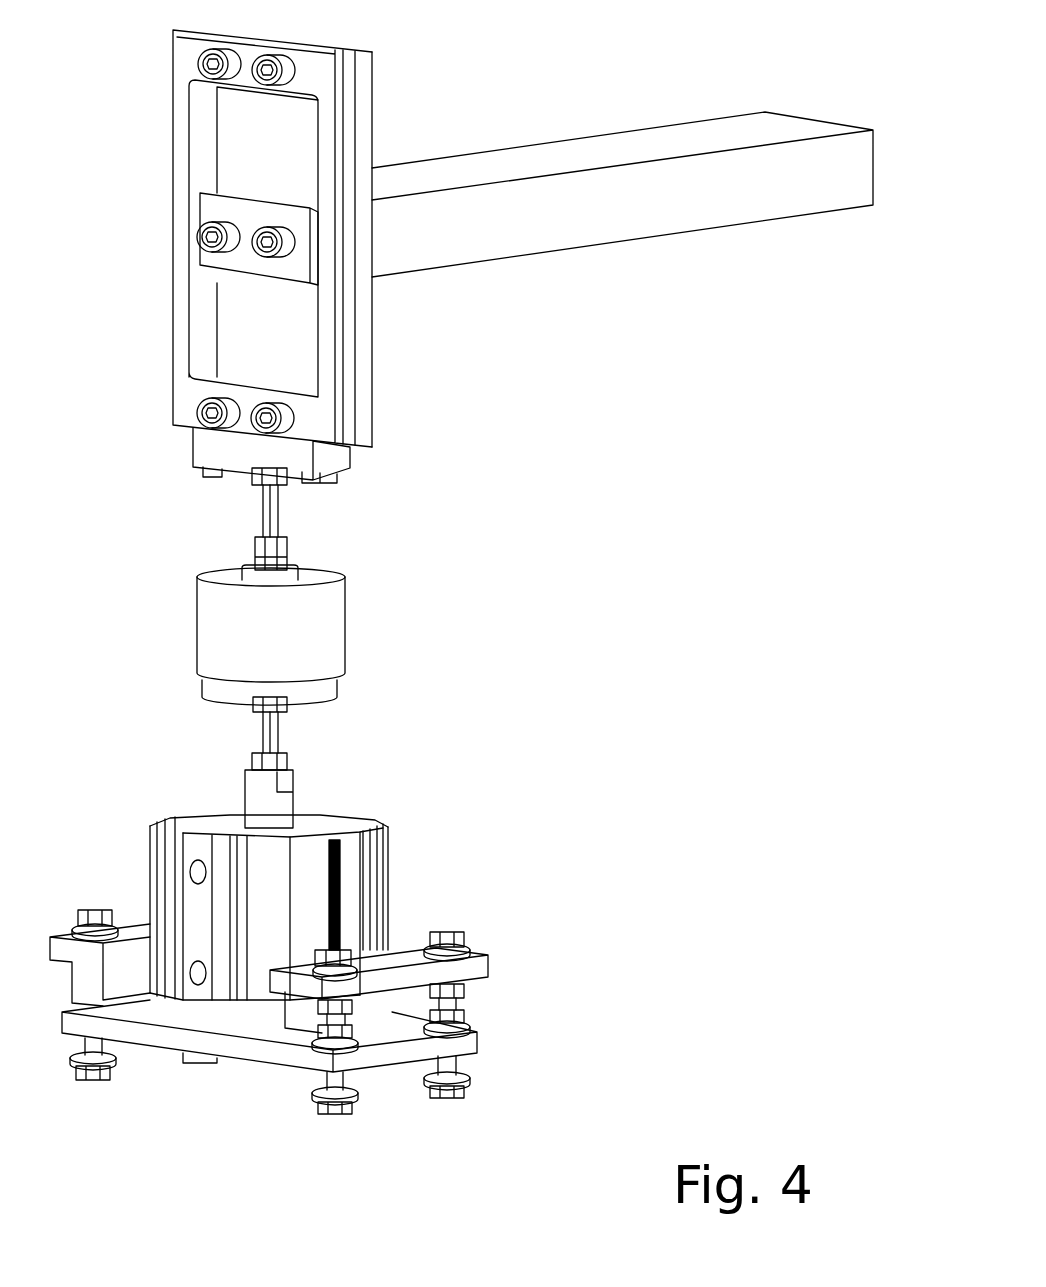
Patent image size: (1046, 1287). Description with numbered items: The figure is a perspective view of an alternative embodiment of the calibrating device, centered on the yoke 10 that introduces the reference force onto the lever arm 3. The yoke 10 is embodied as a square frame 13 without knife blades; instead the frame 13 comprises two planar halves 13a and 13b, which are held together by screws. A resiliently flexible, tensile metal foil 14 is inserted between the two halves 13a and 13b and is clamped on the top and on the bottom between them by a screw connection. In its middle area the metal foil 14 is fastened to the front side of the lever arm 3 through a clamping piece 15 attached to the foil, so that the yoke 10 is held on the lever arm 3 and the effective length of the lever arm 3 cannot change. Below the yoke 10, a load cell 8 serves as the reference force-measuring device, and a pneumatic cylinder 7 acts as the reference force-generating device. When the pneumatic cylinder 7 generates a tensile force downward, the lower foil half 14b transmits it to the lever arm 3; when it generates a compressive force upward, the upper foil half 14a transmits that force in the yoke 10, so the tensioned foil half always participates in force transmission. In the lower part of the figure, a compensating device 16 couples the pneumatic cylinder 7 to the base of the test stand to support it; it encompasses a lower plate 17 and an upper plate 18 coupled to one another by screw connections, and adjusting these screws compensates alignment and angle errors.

The lever arm 3 is at (555, 218).
The pneumatic cylinder 7 is at (387, 848).
The load cell 8 is at (330, 628).
The yoke 10 is at (442, 258).
The square frame 13 is at (355, 385).
The planar half 13a is at (357, 445).
The planar half 13b is at (355, 425).
The metal foil 14 is at (361, 218).
The upper foil half 14a is at (282, 167).
The lower foil half 14b is at (293, 340).
The clamping piece 15 is at (283, 283).
The compensating device 16 is at (398, 1006).
The lower plate 17 is at (478, 1040).
The upper plate 18 is at (490, 960).